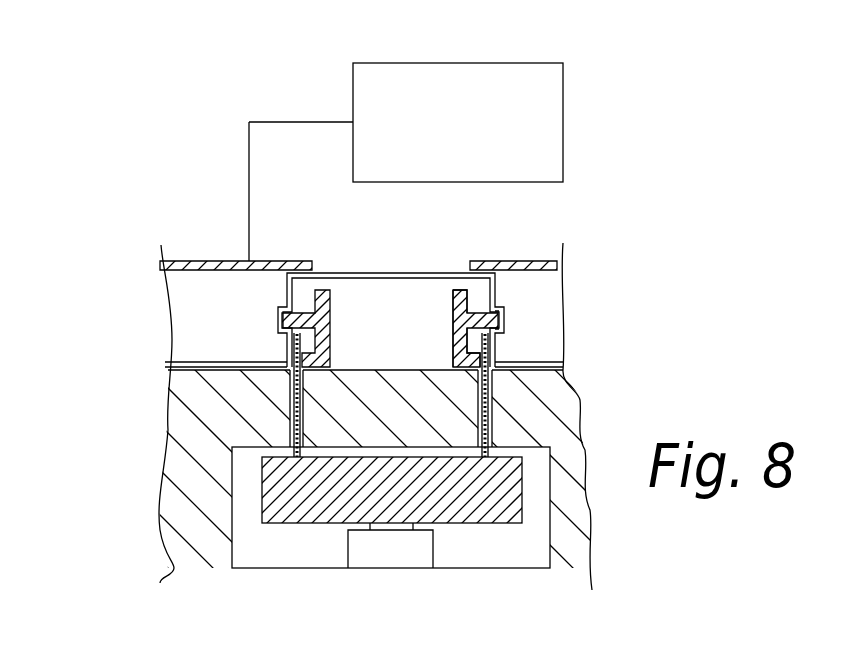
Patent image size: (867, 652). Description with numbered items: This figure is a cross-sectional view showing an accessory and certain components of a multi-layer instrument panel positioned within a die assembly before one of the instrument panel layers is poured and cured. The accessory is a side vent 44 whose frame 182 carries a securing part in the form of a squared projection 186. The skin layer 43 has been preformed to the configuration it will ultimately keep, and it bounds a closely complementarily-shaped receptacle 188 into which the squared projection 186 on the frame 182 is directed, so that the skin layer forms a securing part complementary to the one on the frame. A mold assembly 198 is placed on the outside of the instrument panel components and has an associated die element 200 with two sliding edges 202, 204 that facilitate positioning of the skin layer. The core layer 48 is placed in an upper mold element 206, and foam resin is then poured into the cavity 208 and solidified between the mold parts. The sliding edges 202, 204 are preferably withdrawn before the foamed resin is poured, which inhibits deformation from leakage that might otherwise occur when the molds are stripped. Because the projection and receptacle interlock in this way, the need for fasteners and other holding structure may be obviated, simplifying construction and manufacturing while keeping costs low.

The skin layer 43 is at (497, 348).
The side vent 44 is at (453, 323).
The core layer 48 is at (210, 260).
The frame 182 is at (477, 313).
The squared projection 186 is at (473, 323).
The receptacle 188 is at (507, 322).
The mold assembly 198 is at (192, 540).
The die element 200 is at (507, 507).
The sliding edge 202 is at (294, 411).
The sliding edge 204 is at (488, 405).
The upper mold element 206 is at (557, 176).
The cavity 208 is at (540, 285).